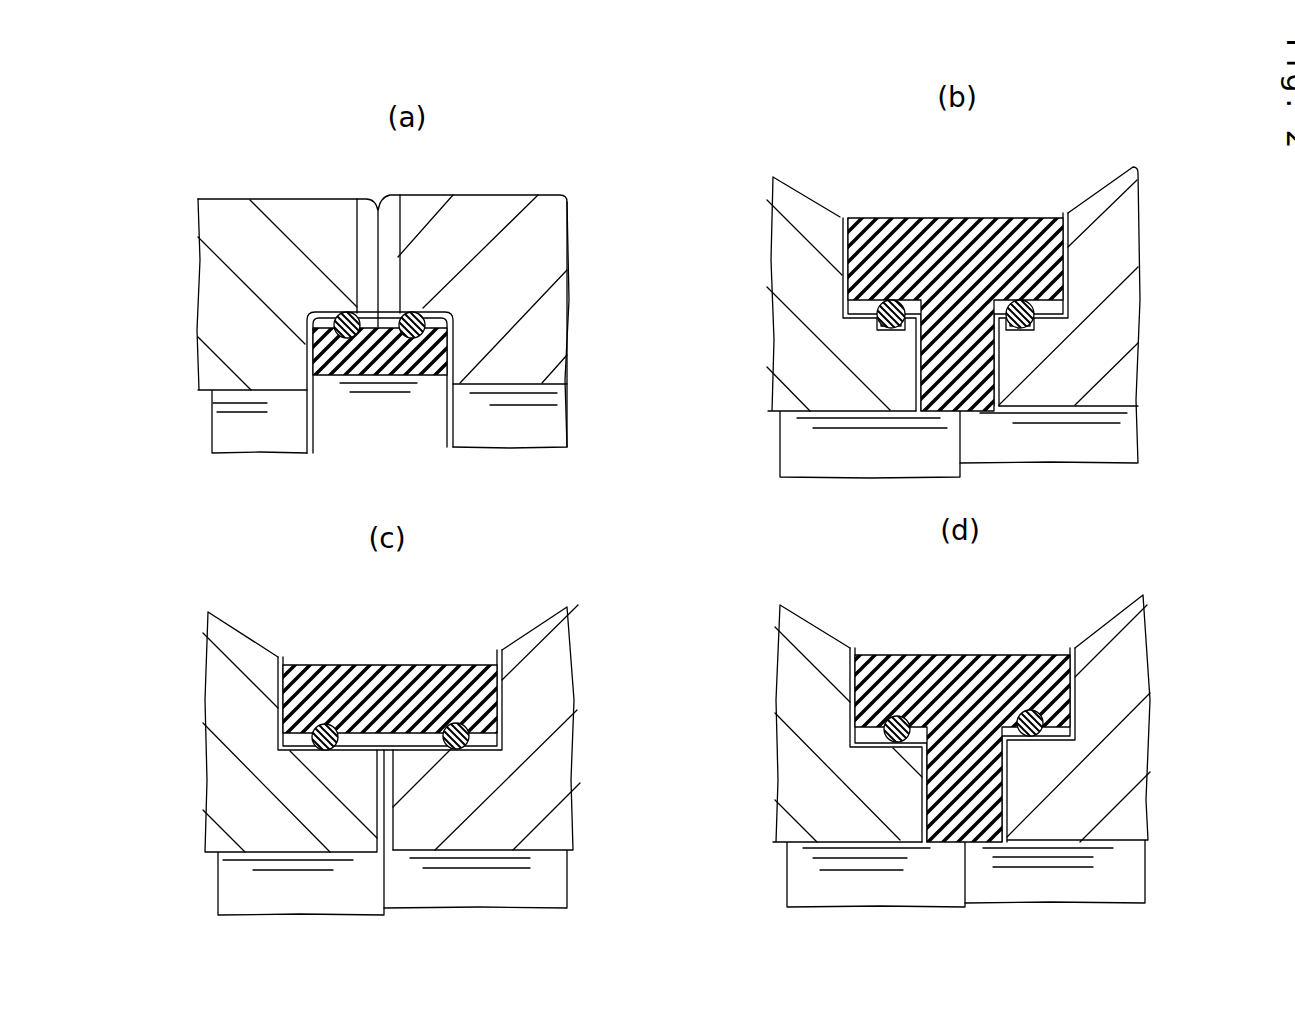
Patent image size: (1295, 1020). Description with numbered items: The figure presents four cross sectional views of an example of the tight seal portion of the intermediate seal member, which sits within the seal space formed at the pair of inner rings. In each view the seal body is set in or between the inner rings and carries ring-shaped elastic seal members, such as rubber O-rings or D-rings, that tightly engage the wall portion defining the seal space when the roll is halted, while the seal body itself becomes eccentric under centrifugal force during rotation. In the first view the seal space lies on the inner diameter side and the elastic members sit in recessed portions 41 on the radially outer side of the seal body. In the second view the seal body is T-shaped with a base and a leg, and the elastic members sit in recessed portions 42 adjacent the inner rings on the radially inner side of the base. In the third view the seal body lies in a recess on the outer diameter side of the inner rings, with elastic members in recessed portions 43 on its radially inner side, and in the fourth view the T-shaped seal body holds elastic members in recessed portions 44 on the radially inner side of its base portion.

The recessed portions 41 is at (423, 337).
The recessed portions 42 is at (1027, 322).
The recessed portions 43 is at (465, 745).
The recessed portions 44 is at (1038, 750).